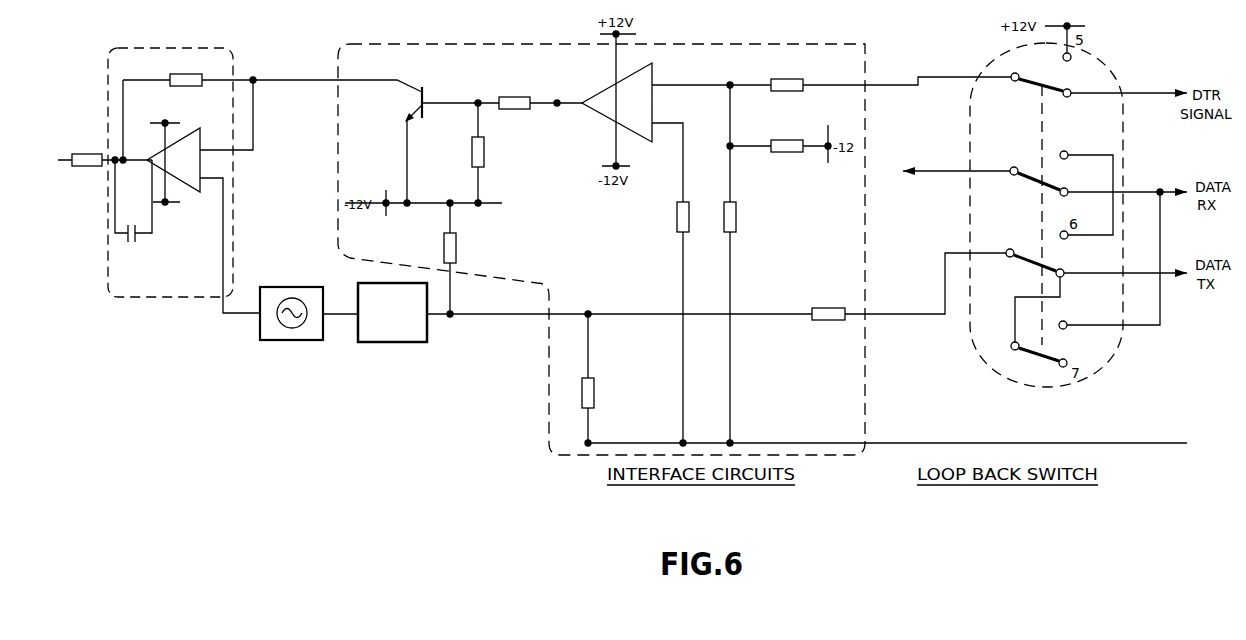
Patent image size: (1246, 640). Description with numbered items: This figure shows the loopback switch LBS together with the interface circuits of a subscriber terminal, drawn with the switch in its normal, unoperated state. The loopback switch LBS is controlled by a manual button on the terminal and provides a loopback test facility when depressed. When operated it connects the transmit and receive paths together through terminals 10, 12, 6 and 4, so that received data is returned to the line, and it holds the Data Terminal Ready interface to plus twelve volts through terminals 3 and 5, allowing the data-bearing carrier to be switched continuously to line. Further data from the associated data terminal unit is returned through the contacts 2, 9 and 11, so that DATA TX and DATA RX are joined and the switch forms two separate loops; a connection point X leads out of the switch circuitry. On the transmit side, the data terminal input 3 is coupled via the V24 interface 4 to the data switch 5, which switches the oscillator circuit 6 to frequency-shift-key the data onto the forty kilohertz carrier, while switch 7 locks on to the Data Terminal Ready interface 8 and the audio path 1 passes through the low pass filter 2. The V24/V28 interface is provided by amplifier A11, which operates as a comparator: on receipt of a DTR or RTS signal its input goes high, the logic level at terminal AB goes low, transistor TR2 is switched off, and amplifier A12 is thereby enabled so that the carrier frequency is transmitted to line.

The audio path 1 is at (1125, 100).
The low pass filter 2 is at (1101, 305).
The data terminal input 3 is at (1036, 73).
The V24 interface 4 is at (1030, 250).
The data switch 5 is at (382, 344).
The oscillator circuit 6 is at (290, 342).
The switch 7 is at (159, 196).
The Data Terminal Ready interface 8 is at (1123, 256).
The bandpass filter 9 is at (1027, 350).
The loopback switch terminal 10 is at (981, 180).
The loopback switch contact 11 is at (1073, 317).
The loopback switch terminal 12 is at (1086, 185).
The transistor TR2 is at (429, 103).
The amplifier A11 is at (617, 102).
The amplifier A12 is at (173, 160).
The terminal AB is at (556, 113).
The connection point X is at (888, 174).
The loopback switch LBS is at (1095, 370).